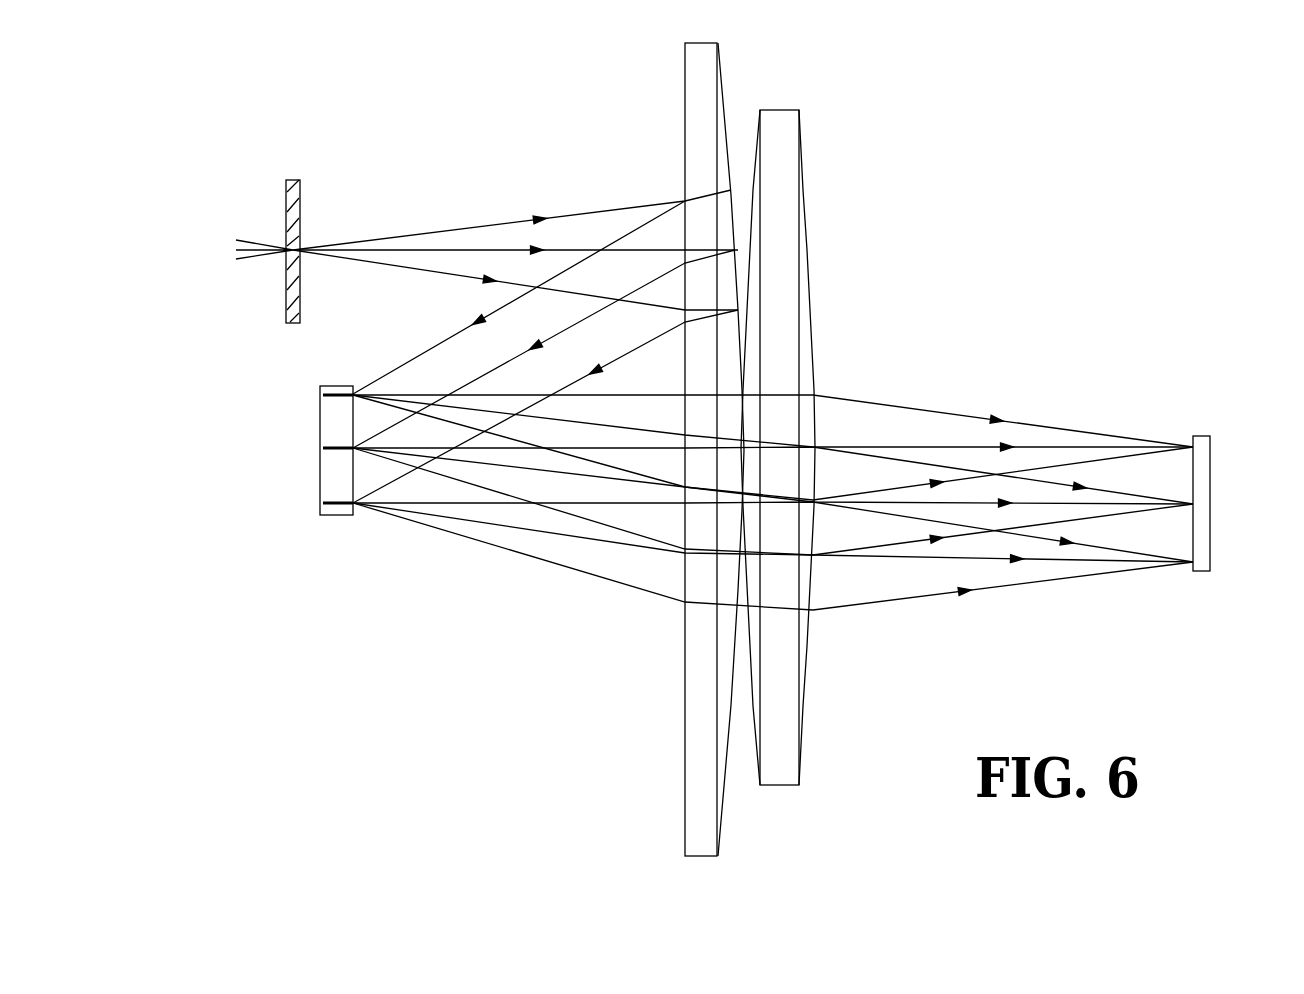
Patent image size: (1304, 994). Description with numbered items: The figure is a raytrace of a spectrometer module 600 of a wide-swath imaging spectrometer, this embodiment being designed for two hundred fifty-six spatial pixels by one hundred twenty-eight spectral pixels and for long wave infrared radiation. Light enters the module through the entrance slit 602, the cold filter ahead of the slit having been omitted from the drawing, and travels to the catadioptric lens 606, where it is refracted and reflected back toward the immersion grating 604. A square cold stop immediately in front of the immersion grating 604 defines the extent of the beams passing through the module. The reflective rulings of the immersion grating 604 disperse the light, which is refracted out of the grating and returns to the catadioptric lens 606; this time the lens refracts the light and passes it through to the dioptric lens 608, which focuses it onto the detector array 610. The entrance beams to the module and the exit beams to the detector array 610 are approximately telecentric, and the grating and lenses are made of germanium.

The spectrometer module 600 is at (1034, 209).
The entrance slit 602 is at (285, 218).
The immersion grating 604 is at (318, 467).
The catadioptric lens 606 is at (683, 97).
The dioptric lens 608 is at (783, 109).
The detector array 610 is at (1197, 436).